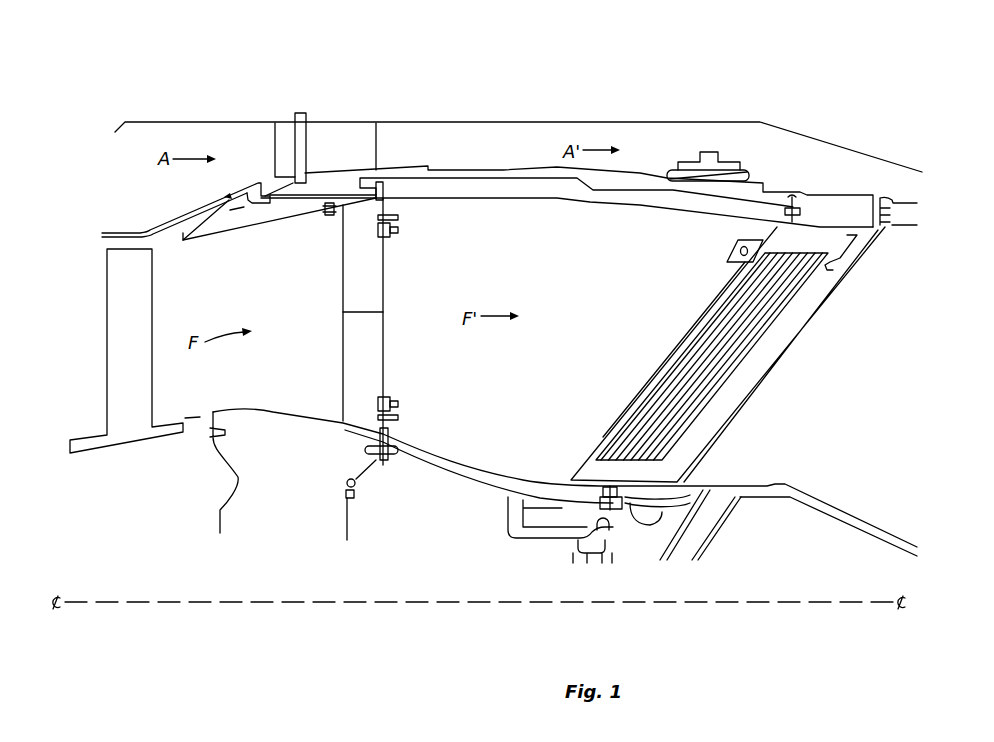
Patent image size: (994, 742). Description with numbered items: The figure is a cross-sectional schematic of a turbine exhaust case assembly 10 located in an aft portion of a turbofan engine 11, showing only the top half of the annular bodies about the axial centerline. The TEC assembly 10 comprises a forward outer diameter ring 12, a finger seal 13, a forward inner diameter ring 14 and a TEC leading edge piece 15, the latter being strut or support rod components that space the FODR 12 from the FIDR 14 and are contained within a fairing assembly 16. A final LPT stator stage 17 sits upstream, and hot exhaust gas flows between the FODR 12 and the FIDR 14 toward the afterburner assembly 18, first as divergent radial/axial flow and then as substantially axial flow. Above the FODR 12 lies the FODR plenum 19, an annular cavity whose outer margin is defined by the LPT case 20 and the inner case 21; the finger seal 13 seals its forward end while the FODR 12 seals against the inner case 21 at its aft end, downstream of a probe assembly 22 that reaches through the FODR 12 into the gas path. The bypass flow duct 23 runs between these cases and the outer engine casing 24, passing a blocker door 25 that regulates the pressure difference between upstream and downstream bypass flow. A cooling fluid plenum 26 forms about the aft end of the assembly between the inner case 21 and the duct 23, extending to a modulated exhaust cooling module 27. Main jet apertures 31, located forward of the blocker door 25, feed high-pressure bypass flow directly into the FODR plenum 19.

The turbine exhaust case assembly 10 is at (93, 216).
The turbofan engine 11 is at (734, 88).
The forward outer diameter ring 12 is at (285, 222).
The finger seal 13 is at (187, 213).
The forward inner diameter ring 14 is at (284, 413).
The TEC leading edge piece 15 is at (357, 357).
The fairing assembly 16 is at (376, 328).
The final LPT stator stage 17 is at (132, 325).
The afterburner assembly 18 is at (788, 370).
The forward outer diameter ring plenum 19 is at (237, 208).
The LPT case 20 is at (160, 225).
The inner case 21 is at (320, 190).
The probe assembly 22 is at (326, 224).
The bypass flow duct 23 is at (198, 137).
The outer engine casing 24 is at (148, 123).
The blocker door 25 is at (277, 106).
The cooling fluid plenum 26 is at (347, 183).
The modulated exhaust cooling module 27 is at (730, 156).
The main jet cooling fluid apertures 31 is at (273, 193).